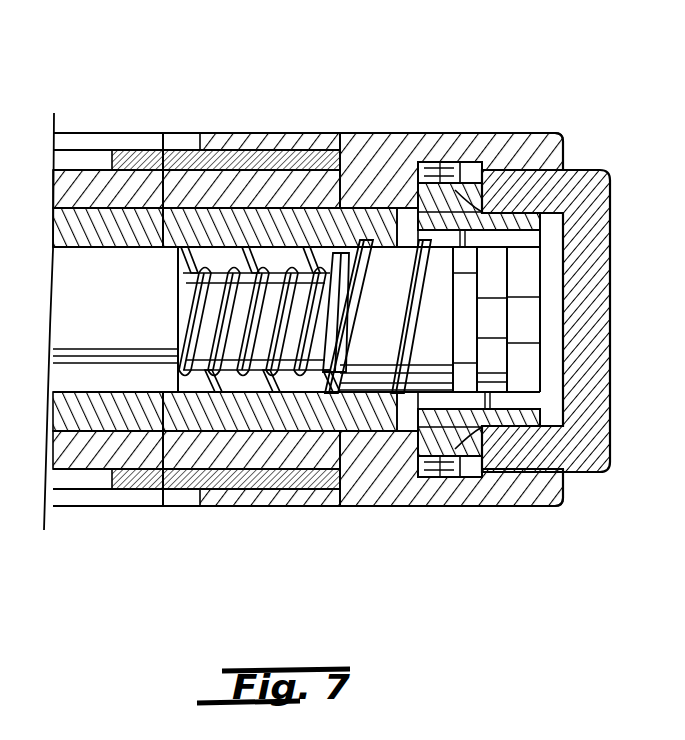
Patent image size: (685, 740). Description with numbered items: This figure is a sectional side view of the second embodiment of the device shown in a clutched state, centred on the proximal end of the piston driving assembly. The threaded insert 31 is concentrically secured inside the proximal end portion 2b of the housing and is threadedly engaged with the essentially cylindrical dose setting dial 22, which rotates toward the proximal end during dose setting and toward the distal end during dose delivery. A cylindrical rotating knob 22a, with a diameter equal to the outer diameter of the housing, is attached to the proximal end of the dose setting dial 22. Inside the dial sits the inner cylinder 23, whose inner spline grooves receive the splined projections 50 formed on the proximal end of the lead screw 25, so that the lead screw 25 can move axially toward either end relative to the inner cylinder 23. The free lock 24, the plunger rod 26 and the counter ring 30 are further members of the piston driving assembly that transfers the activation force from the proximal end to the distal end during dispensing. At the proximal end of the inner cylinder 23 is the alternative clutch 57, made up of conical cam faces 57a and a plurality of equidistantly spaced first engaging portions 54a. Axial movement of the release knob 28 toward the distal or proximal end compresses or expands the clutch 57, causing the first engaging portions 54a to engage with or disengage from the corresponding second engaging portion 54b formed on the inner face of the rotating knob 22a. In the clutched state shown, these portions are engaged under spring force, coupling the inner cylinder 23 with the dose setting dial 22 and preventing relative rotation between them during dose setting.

The proximal end portion 2b is at (240, 133).
The dose setting dial 22 is at (84, 133).
The rotating knob 22a is at (543, 133).
The inner cylinder 23 is at (163, 133).
The free lock 24 is at (375, 372).
The lead screw 25 is at (240, 372).
The plunger rod 26 is at (118, 340).
The release knob 28 is at (583, 298).
The counter ring 30 is at (137, 150).
The threaded insert 31 is at (295, 150).
The splined projections 50 is at (493, 320).
The first engaging portions 54a is at (462, 162).
The second engaging portion 54b is at (425, 162).
The clutch 57 is at (437, 326).
The conical cam faces 57a is at (505, 215).